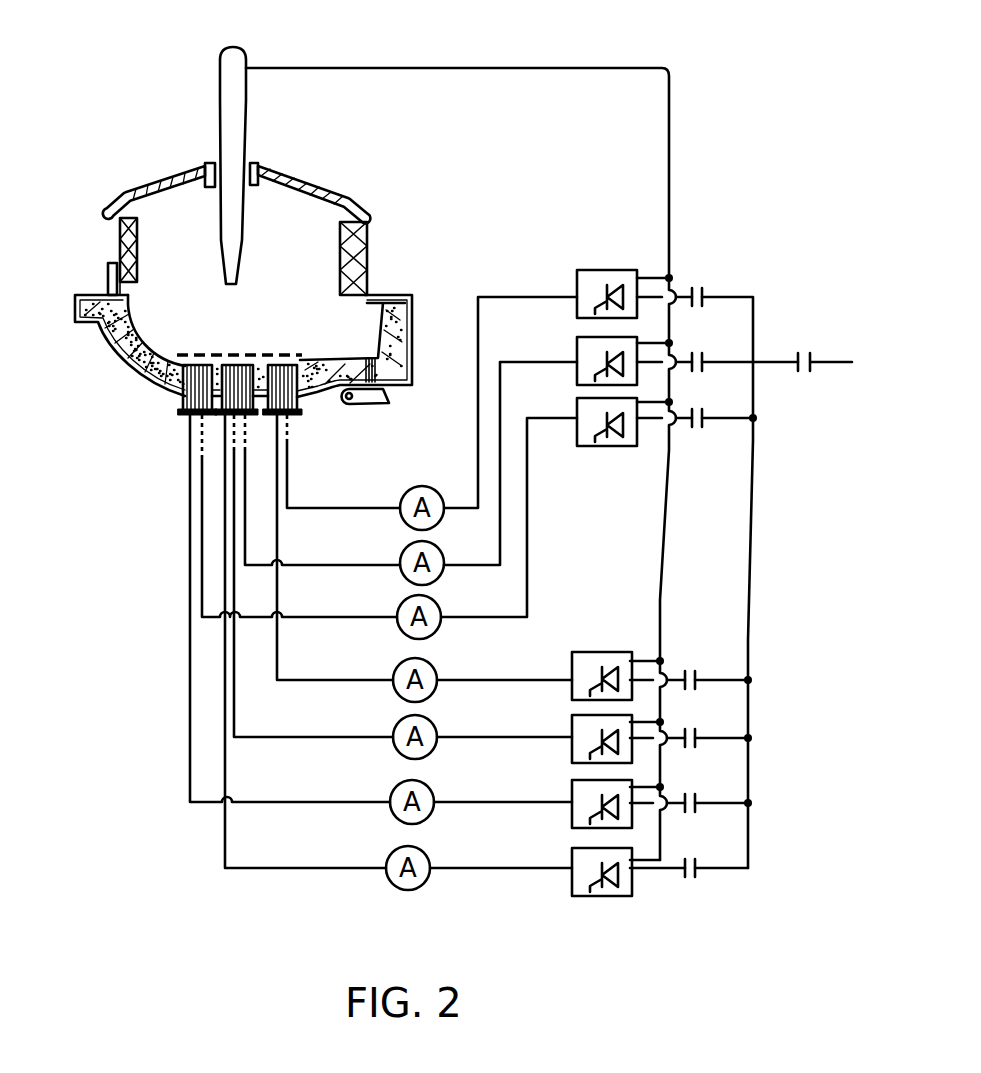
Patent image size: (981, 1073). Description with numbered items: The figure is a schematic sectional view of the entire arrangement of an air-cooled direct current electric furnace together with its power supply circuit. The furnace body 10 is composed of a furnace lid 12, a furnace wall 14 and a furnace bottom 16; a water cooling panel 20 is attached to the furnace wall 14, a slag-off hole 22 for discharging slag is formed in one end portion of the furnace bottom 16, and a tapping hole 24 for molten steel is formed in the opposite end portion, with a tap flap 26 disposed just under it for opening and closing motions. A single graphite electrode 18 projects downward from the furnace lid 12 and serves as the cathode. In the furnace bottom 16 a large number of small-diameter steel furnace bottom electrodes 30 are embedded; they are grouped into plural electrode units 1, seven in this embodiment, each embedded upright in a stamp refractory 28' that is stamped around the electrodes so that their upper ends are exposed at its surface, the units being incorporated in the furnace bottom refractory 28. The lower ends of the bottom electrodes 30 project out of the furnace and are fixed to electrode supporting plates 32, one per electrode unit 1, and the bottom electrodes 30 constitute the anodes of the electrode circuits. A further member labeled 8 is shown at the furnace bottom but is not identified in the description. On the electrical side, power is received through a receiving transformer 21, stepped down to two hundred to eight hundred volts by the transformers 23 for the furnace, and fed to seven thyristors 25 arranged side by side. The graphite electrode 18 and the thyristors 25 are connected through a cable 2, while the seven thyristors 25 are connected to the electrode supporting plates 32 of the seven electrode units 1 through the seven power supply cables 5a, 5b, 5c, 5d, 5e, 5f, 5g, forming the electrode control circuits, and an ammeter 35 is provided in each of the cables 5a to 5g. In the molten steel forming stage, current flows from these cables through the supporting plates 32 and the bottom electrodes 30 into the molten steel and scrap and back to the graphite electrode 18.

The electrode unit 1 is at (167, 422).
The cable 2 is at (458, 68).
The bottom electrode 8 is at (234, 357).
The furnace body 10 is at (379, 180).
The furnace lid 12 is at (308, 185).
The furnace wall 14 is at (368, 243).
The furnace bottom 16 is at (128, 364).
The graphite electrode 18 is at (217, 108).
The water cooling panel 20 is at (137, 240).
The receiving transformer 21 is at (807, 347).
The slag-off hole 22 is at (90, 294).
The transformers for the furnace 23 is at (696, 283).
The tapping hole 24 is at (405, 360).
The thyristors 25 is at (610, 270).
The tap flap 26 is at (385, 403).
The furnace bottom refractory 28 is at (346, 418).
The stamp refractory 28' is at (236, 316).
The furnace bottom electrodes 30 is at (290, 358).
The electrode supporting plates 32 is at (186, 418).
The ammeter 35 is at (408, 892).
The power supply cable 5a is at (478, 473).
The power supply cable 5b is at (500, 535).
The power supply cable 5c is at (527, 592).
The power supply cable 5d is at (467, 678).
The power supply cable 5e is at (467, 737).
The power supply cable 5f is at (465, 800).
The power supply cable 5g is at (460, 867).